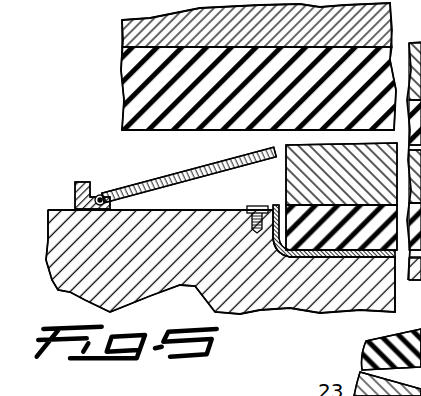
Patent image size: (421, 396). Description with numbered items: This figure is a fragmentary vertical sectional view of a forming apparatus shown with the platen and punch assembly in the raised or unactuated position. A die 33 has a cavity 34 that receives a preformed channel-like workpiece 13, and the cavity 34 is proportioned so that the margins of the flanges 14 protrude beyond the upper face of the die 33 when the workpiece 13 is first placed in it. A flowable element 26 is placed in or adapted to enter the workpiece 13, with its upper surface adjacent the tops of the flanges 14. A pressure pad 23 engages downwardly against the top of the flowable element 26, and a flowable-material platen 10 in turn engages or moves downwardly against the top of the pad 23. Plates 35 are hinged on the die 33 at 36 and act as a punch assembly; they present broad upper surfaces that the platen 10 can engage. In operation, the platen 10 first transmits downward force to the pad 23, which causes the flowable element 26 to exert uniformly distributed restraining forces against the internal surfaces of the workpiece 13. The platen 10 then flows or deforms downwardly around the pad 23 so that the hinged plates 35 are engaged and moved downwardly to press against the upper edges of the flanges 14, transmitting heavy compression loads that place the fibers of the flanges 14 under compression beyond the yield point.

The platen 10 is at (122, 84).
The workpiece 13 is at (365, 252).
The flanges 14 is at (274, 207).
The pressure pad 23 is at (286, 146).
The flowable element 26 is at (287, 255).
The die 33 is at (58, 291).
The cavity 34 is at (340, 258).
The plates 35 is at (190, 170).
The hinge 36 is at (100, 197).